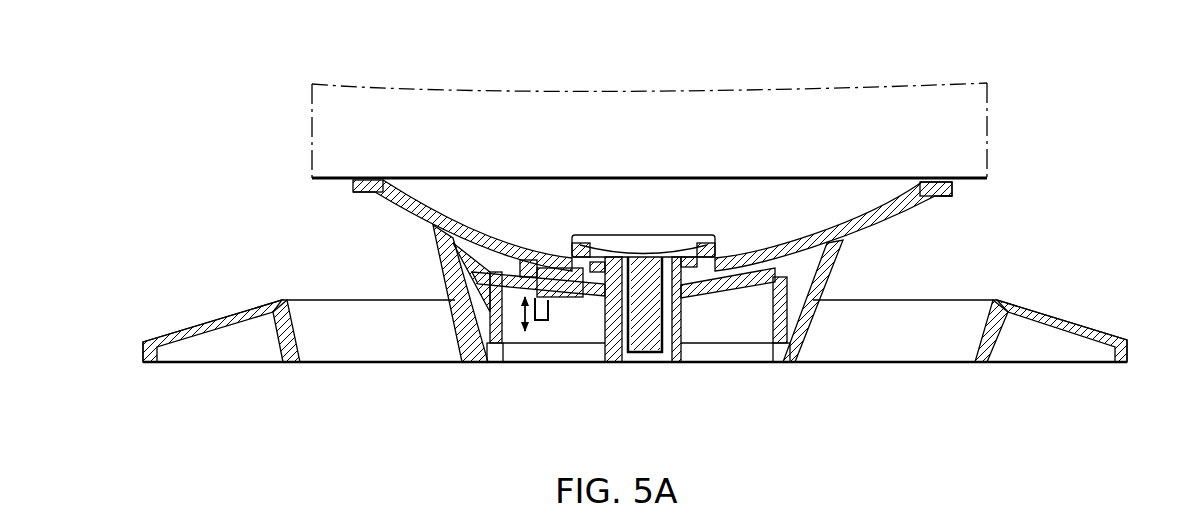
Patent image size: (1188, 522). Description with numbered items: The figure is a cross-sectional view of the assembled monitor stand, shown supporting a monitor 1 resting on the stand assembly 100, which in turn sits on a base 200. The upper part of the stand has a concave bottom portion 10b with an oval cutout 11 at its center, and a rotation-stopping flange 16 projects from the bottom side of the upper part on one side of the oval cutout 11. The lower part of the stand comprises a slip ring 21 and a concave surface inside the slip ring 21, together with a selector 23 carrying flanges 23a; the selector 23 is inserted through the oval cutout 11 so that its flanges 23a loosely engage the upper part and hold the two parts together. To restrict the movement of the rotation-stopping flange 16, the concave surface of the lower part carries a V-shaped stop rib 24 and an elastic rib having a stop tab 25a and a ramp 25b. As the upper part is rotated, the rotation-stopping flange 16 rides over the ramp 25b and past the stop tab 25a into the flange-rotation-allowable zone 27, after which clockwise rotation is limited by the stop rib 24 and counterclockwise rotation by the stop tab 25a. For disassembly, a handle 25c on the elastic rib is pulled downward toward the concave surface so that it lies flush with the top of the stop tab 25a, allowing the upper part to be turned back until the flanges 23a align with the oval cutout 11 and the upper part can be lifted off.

The body to be supported 1 is at (330, 141).
The vibration isolating support device 100 is at (350, 192).
The slip ring 21 is at (433, 226).
The concave bottom portion 10b is at (848, 232).
The oval cutout 11 is at (695, 235).
The selector 23 is at (578, 258).
The flanges 23a is at (712, 257).
The stop tab 25a is at (540, 262).
The ramp 25b is at (578, 282).
The handle 25c is at (545, 320).
The flange-rotation-allowable zone 27 is at (473, 252).
The rotation-stopping flange 16 is at (490, 278).
The V-shaped stop rib 24 is at (747, 277).
The base plate 200 is at (1052, 310).